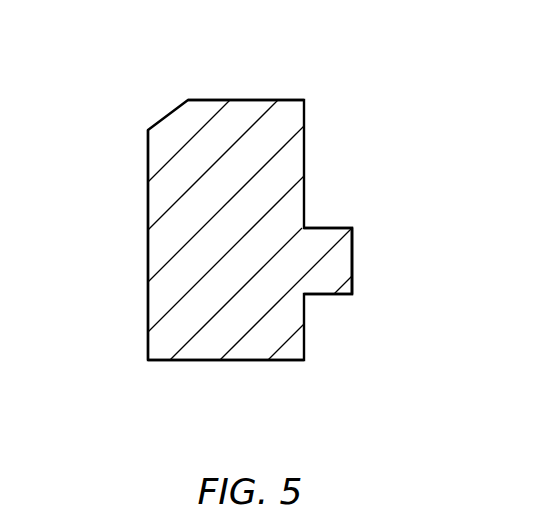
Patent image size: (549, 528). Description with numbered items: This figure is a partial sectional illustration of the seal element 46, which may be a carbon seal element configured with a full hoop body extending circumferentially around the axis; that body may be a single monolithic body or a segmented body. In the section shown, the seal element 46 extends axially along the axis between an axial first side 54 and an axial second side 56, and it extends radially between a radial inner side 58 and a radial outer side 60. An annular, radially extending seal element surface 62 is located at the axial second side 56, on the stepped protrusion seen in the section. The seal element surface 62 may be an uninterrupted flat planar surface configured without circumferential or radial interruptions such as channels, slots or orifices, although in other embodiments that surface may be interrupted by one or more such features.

The seal element 46 is at (362, 91).
The axial first side 54 is at (148, 253).
The axial second side 56 is at (353, 247).
The radial inner side 58 is at (185, 361).
The radial outer side 60 is at (220, 99).
The seal element surface 62 is at (353, 273).